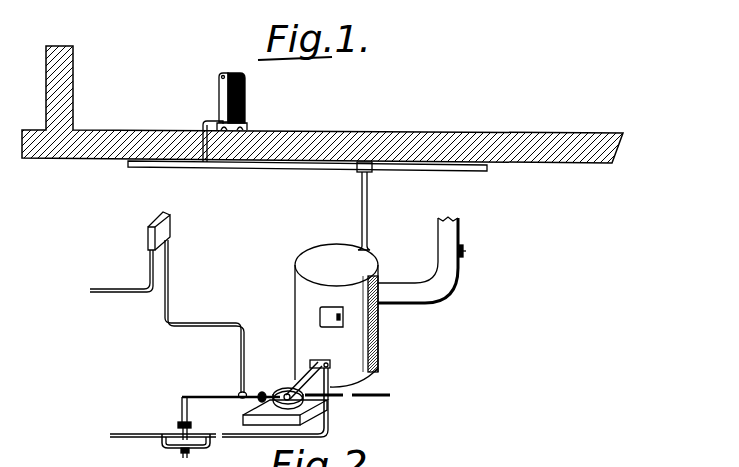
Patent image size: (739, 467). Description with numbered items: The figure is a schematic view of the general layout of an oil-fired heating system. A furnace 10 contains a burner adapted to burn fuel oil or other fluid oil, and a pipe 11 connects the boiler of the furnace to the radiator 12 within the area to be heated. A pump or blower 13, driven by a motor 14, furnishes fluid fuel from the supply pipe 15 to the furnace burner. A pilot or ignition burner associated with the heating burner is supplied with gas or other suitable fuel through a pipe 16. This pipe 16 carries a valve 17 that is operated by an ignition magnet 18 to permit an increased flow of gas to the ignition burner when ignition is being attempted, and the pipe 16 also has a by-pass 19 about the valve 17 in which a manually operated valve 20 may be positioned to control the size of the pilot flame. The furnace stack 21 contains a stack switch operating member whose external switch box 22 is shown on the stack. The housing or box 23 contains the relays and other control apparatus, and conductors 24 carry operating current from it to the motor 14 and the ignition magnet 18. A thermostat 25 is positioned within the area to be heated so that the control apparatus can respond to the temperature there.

The furnace 10 is at (378, 372).
The pipe 11 is at (368, 223).
The radiator 12 is at (245, 107).
The pump or blower 13 is at (290, 391).
The motor 14 is at (252, 393).
The supply pipe 15 is at (363, 400).
The pipe 16 is at (329, 431).
The valve 17 is at (235, 436).
The ignition magnet 18 is at (179, 422).
The by-pass 19 is at (162, 445).
The manually operated valve 20 is at (190, 453).
The furnace stack 21 is at (458, 232).
The external switch box 22 is at (466, 251).
The housing or box 23 is at (162, 231).
The conductors 24 is at (112, 293).
The thermostat 25 is at (73, 58).